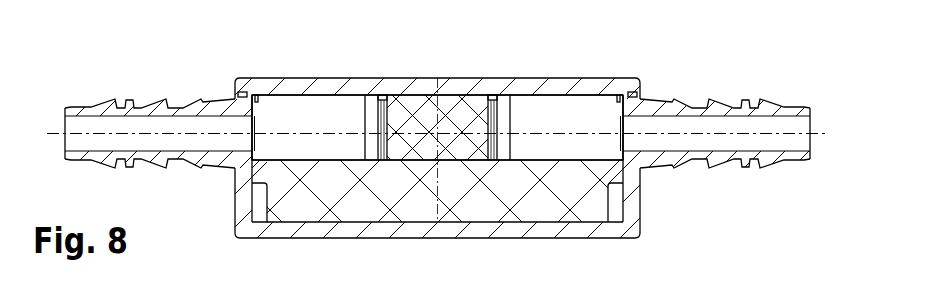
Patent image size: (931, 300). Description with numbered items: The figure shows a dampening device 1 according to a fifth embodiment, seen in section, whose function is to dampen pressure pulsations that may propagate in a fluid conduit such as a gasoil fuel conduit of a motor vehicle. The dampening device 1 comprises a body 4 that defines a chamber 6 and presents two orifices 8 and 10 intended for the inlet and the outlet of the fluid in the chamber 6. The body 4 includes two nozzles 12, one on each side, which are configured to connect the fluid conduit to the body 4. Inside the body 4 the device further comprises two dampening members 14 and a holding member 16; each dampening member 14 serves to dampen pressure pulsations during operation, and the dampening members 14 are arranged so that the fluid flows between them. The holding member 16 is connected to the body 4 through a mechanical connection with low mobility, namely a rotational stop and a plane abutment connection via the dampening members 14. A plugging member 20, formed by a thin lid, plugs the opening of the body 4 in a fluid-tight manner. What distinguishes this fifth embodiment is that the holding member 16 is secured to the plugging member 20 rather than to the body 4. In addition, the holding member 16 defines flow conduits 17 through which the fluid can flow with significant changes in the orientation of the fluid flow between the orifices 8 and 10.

The dampening device 1 is at (180, 199).
The body 4 is at (630, 208).
The chamber 6 is at (566, 114).
The orifice 8 is at (240, 128).
The orifice 10 is at (636, 125).
The nozzle 12 is at (138, 108).
The dampening member 14 is at (284, 188).
The holding member 16 is at (403, 137).
The flow conduit 17 is at (437, 261).
The plugging member 20 is at (312, 88).